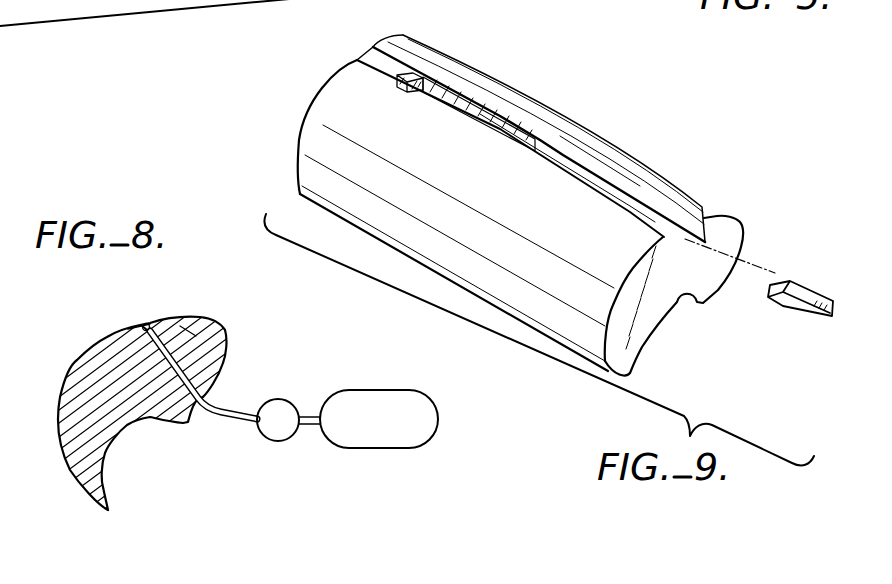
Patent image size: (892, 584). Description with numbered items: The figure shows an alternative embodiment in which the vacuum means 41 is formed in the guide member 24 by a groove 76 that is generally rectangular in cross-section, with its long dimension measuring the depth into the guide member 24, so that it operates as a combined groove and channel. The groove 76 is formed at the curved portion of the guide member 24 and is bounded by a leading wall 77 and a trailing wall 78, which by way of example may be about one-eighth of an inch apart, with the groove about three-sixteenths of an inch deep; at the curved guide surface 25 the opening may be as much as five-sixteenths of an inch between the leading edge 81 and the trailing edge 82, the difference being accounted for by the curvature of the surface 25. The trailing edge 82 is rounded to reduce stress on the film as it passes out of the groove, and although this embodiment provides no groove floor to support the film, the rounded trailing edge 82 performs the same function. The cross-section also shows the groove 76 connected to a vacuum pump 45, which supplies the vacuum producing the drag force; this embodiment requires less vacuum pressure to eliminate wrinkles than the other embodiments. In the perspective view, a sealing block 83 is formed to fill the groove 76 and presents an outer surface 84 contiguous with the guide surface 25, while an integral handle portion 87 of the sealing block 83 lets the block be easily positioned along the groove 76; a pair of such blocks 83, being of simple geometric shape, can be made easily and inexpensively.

In FIG. 8, the guide member 24 is at (121, 423).
In FIG. 9, the guide member 24 is at (747, 233).
In FIG. 8, the guide surface 25 is at (77, 362).
In FIG. 9, the guide surface 25 is at (587, 150).
In FIG. 9, the vacuum means 41 is at (369, 55).
In FIG. 8, the vacuum pump 45 is at (412, 391).
In FIG. 8, the groove 76 is at (188, 331).
In FIG. 9, the groove 76 is at (532, 143).
In FIG. 8, the leading wall 77 is at (152, 333).
In FIG. 8, the trailing wall 78 is at (137, 326).
In FIG. 8, the leading edge 81 is at (141, 327).
In FIG. 8, the trailing edge 82 is at (133, 328).
In FIG. 9, the sealing block 83 is at (416, 99).
In FIG. 9, the outer surface 84 is at (443, 92).
In FIG. 9, the handle portion 87 is at (398, 90).